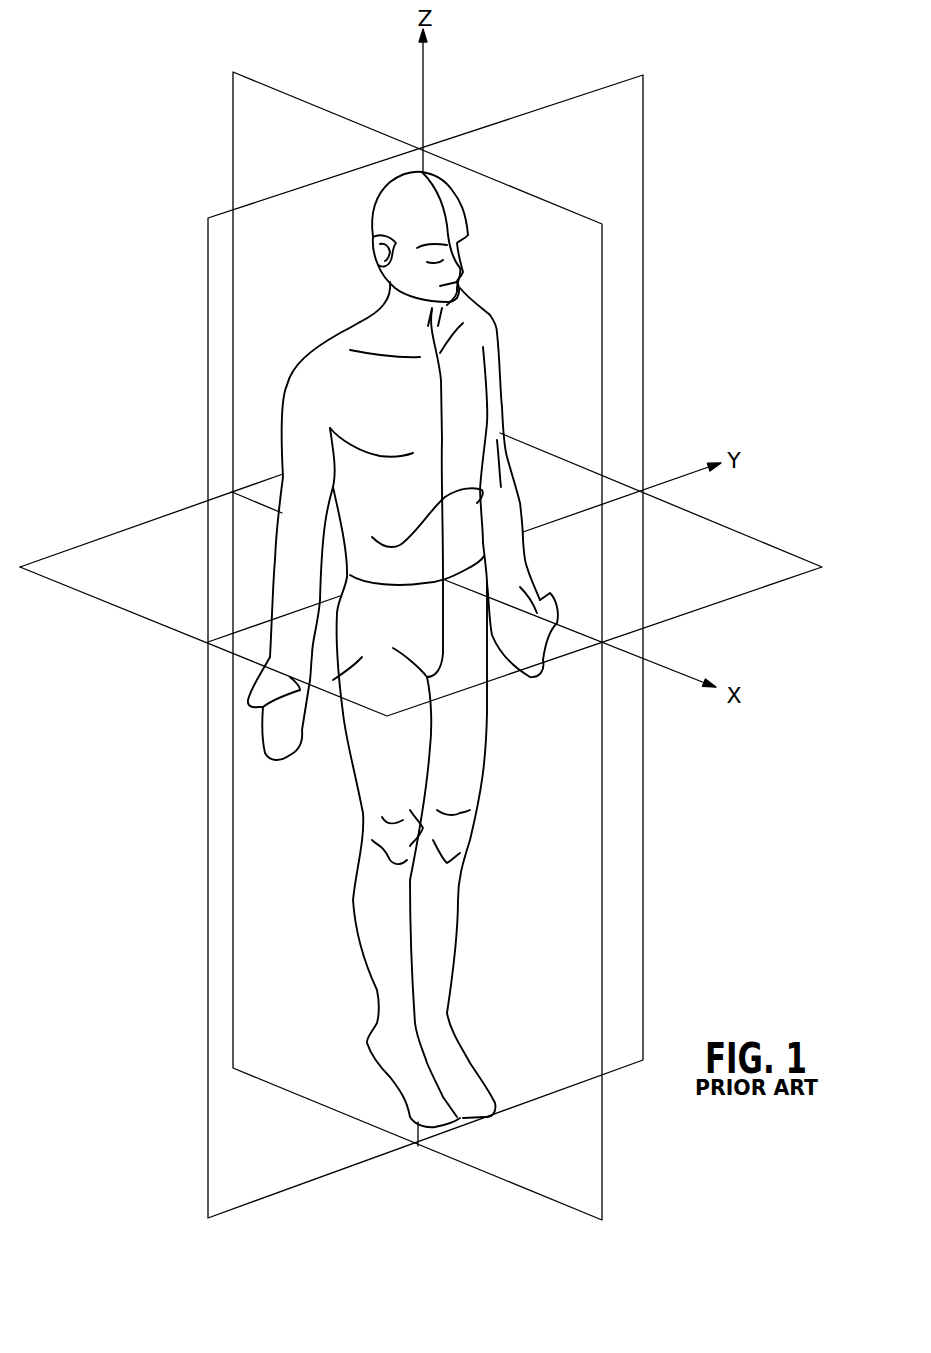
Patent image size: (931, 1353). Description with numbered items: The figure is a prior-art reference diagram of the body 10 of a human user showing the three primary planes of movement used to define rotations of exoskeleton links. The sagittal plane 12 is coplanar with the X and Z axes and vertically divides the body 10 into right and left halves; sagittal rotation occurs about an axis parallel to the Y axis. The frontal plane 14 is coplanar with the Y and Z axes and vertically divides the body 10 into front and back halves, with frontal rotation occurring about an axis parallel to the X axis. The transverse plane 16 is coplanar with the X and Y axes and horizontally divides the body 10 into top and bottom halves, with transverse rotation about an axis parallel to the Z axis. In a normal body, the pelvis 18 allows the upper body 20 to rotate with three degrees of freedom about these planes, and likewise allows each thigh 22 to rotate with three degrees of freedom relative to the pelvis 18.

The body 10 is at (351, 649).
The sagittal plane 12 is at (250, 126).
The frontal plane 14 is at (582, 97).
The transverse plane 16 is at (746, 557).
The pelvis 18 is at (355, 665).
The upper body 20 is at (378, 478).
The thigh 22 is at (380, 757).